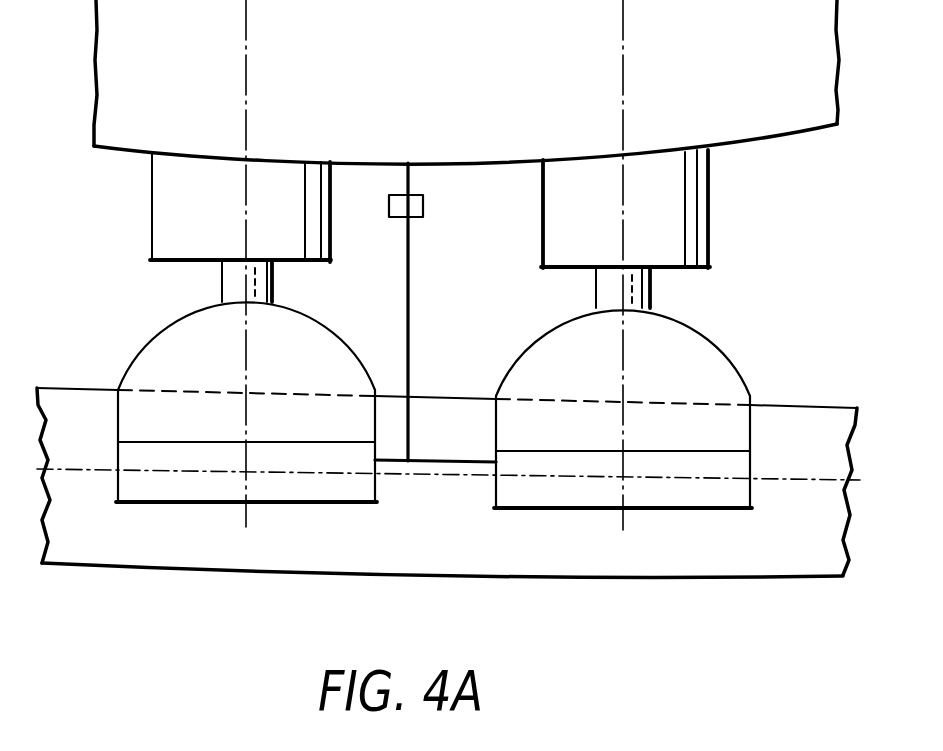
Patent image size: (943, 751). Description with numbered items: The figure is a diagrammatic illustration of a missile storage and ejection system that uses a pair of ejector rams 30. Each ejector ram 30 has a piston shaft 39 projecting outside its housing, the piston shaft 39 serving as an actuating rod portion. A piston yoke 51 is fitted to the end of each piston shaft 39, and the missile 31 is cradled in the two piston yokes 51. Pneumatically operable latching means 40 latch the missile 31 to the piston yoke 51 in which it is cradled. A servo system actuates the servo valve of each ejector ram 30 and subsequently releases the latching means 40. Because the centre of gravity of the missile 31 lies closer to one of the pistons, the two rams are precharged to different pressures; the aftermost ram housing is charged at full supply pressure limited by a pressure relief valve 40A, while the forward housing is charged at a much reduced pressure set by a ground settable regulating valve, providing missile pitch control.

The ejector ram 30 is at (195, 218).
The piston shaft 39 is at (233, 284).
The piston yoke 51 is at (170, 350).
The pressure relief valve 40A is at (424, 206).
The missile 31 is at (425, 545).
The pneumatically operable latching means 40 is at (216, 482).